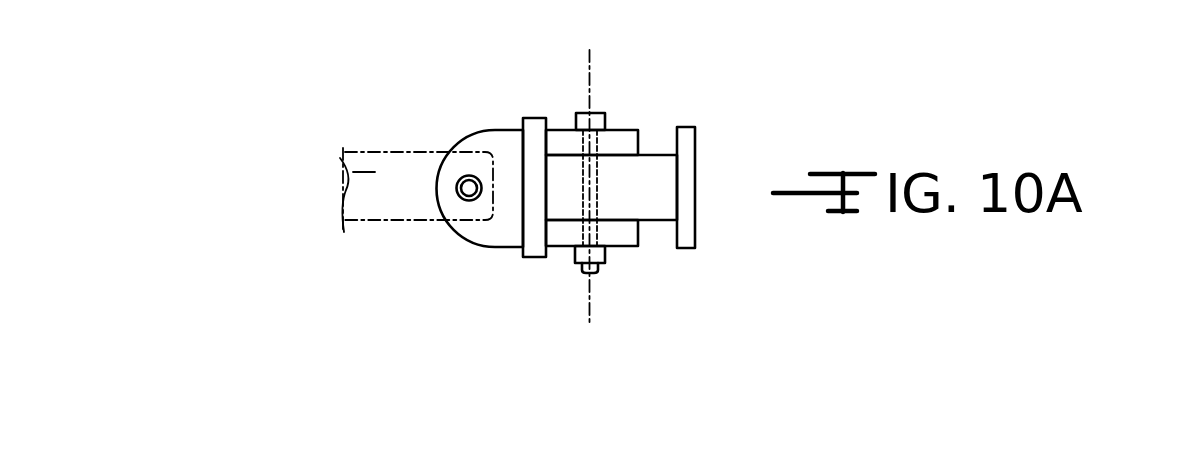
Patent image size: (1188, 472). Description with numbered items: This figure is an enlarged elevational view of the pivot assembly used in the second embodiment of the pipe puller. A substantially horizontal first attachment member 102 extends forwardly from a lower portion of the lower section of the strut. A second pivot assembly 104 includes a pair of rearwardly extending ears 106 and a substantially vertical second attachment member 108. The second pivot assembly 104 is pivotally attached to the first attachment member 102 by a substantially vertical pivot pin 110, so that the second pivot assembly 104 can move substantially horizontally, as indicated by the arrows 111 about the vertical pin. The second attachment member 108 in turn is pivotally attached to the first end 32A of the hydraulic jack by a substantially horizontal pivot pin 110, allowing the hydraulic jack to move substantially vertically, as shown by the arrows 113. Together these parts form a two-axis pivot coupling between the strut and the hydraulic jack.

The first end 32A is at (345, 170).
The first attachment member 102 is at (659, 213).
The second pivot assembly 104 is at (515, 111).
The ears 106 is at (622, 132).
The second attachment member 108 is at (487, 233).
The pivot pin 110 is at (469, 176).
The arrows 111 is at (605, 83).
The arrows 113 is at (424, 97).